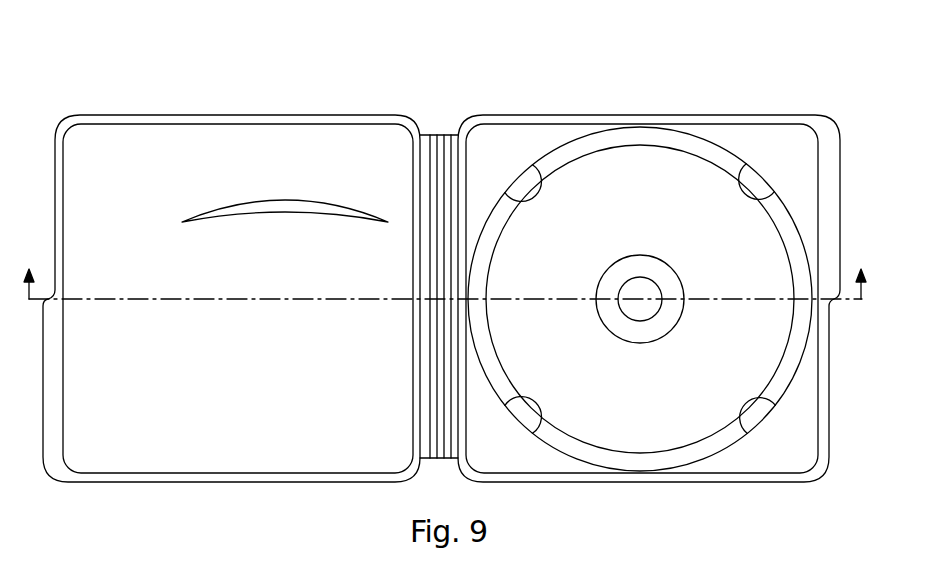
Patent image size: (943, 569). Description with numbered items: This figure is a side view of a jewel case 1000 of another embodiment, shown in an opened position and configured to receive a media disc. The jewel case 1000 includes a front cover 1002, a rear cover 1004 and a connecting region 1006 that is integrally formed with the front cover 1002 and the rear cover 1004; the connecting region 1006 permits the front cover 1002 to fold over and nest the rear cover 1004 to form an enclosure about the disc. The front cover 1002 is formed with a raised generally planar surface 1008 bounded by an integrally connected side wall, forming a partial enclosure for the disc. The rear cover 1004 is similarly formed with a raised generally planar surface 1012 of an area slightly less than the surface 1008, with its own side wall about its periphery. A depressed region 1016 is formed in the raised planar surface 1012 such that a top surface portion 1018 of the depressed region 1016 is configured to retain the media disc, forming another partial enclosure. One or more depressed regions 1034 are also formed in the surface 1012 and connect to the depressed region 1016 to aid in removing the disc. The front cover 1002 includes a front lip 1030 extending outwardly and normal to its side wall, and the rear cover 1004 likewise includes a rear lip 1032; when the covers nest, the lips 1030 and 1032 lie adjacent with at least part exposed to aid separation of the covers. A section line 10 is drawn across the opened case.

The jewel case 1000 is at (535, 80).
The section line 10- 10 is at (448, 273).
The front cover 1002 is at (178, 115).
The rear cover 1004 is at (700, 108).
The connecting region 1006 is at (441, 135).
The raised generally planar surface 1008 is at (204, 436).
The raised generally planar surface 1012 is at (796, 420).
The depressed region 1016 is at (725, 427).
The top surface portion 1018 is at (646, 320).
The front lip 1030 is at (53, 394).
The rear lip 1032 is at (832, 193).
The depressed regions 1034 is at (760, 165).